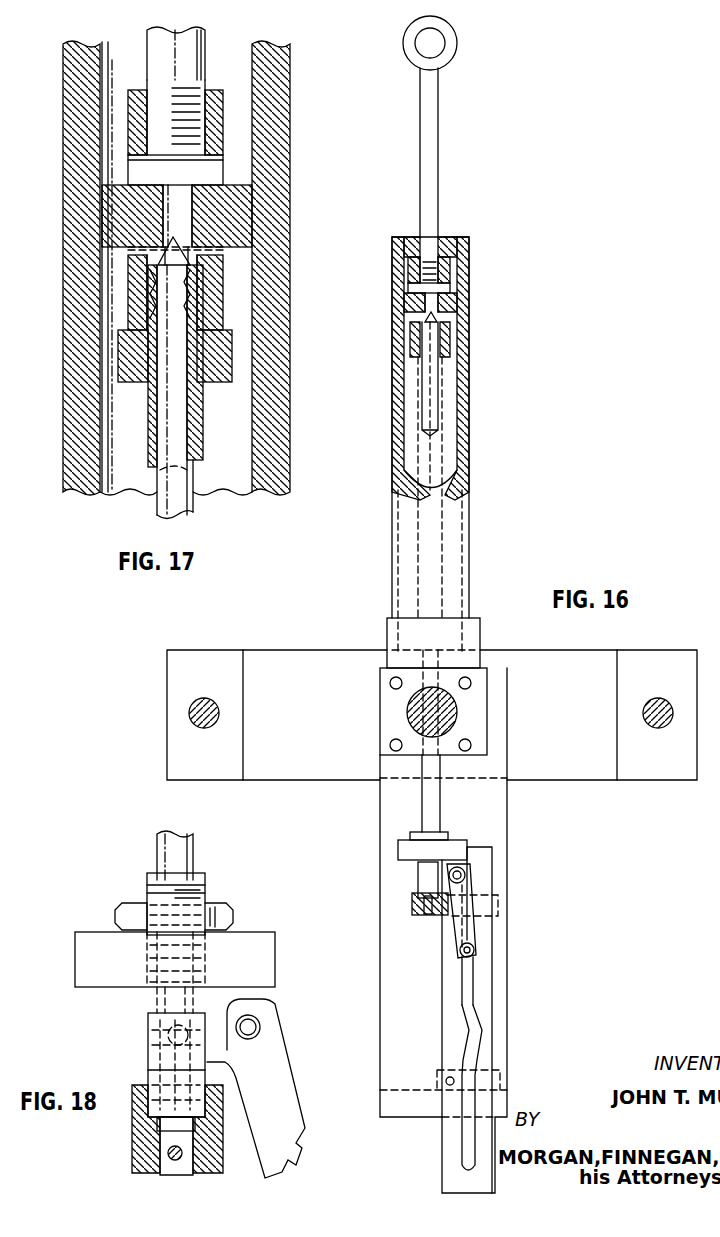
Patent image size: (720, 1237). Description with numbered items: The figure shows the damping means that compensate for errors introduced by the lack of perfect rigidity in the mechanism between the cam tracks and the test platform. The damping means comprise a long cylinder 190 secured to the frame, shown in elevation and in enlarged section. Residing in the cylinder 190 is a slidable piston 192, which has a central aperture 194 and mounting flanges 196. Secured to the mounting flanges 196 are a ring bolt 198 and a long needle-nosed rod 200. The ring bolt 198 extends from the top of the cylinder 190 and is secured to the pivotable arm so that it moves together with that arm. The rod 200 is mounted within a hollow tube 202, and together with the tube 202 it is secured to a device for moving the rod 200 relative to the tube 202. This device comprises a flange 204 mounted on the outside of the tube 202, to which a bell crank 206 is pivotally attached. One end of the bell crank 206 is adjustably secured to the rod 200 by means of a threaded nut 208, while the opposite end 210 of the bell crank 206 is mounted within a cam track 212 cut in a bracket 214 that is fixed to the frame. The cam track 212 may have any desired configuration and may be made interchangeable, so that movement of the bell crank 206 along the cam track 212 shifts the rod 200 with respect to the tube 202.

In FIG. 17, the cylinder 190 is at (278, 78).
In FIG. 16, the cylinder 190 is at (460, 556).
In FIG. 17, the piston 192 is at (240, 200).
In FIG. 16, the piston 192 is at (441, 300).
In FIG. 17, the central aperture 194 is at (180, 216).
In FIG. 16, the central aperture 194 is at (443, 310).
In FIG. 17, the mounting flanges 196 is at (216, 108).
In FIG. 17, the ring bolt 198 is at (157, 56).
In FIG. 16, the ring bolt 198 is at (436, 150).
In FIG. 17, the needle-nosed rod 200 is at (170, 486).
In FIG. 16, the needle-nosed rod 200 is at (430, 400).
In FIG. 18, the needle-nosed rod 200 is at (175, 855).
In FIG. 17, the hollow tube 202 is at (205, 445).
In FIG. 16, the hollow tube 202 is at (430, 462).
In FIG. 18, the hollow tube 202 is at (205, 881).
In FIG. 16, the flange 204 is at (401, 852).
In FIG. 18, the flange 204 is at (264, 962).
In FIG. 16, the bell crank 206 is at (472, 935).
In FIG. 18, the bell crank 206 is at (274, 1078).
In FIG. 16, the threaded nut 208 is at (420, 890).
In FIG. 18, the threaded nut 208 is at (152, 1062).
In FIG. 16, the opposite end of bell crank 210 is at (475, 952).
In FIG. 16, the cam track 212 is at (469, 985).
In FIG. 16, the bracket 214 is at (484, 1040).